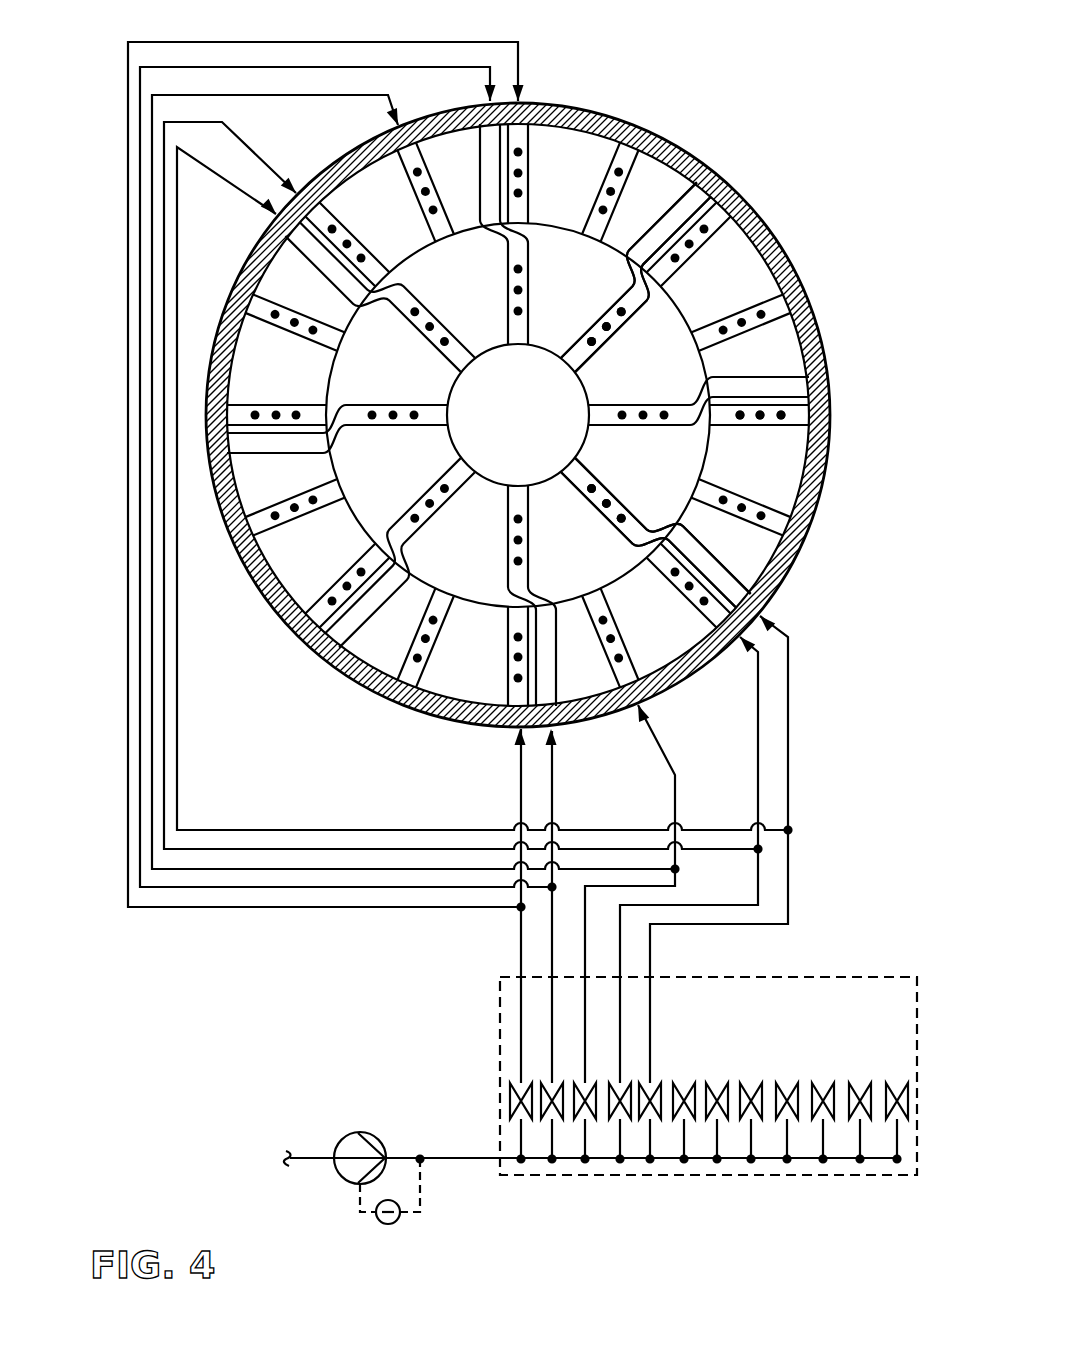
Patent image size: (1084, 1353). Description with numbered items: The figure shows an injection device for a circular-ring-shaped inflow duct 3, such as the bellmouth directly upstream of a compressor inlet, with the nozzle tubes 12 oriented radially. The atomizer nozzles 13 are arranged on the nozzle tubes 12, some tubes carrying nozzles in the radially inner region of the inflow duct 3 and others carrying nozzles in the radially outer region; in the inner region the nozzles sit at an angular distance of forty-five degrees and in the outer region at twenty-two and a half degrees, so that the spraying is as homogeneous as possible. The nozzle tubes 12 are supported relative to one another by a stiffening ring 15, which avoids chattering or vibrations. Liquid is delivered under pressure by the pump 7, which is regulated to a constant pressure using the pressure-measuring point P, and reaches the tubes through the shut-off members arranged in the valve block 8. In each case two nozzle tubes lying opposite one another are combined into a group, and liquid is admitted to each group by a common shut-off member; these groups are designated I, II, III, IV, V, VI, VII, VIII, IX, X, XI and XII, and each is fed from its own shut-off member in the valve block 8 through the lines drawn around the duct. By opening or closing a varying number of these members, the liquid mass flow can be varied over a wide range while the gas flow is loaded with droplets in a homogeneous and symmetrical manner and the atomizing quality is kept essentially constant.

The nozzle group I is at (638, 125).
The nozzle group II is at (316, 657).
The nozzle group III is at (296, 637).
The nozzle group IV is at (228, 535).
The nozzle group V is at (204, 443).
The nozzle group VI is at (204, 415).
The nozzle group VII is at (228, 295).
The nozzle group VIII is at (233, 224).
The nozzle group IX is at (303, 164).
The nozzle group X is at (344, 99).
The nozzle group XI is at (437, 66).
The nozzle group XII is at (563, 74).
The inflow duct 3 is at (652, 484).
The pump 7 is at (365, 1133).
The valve block 8 is at (500, 1080).
The nozzle tubes 12 is at (768, 405).
The atomizer nozzles 13 is at (720, 227).
The stiffening ring 15 is at (690, 515).
The pressure-measuring point P is at (590, 1174).